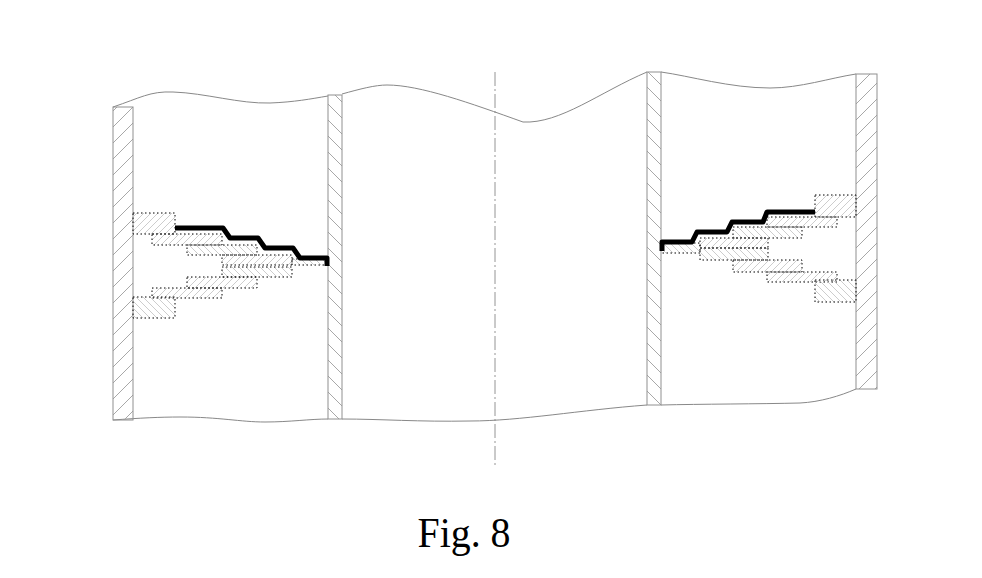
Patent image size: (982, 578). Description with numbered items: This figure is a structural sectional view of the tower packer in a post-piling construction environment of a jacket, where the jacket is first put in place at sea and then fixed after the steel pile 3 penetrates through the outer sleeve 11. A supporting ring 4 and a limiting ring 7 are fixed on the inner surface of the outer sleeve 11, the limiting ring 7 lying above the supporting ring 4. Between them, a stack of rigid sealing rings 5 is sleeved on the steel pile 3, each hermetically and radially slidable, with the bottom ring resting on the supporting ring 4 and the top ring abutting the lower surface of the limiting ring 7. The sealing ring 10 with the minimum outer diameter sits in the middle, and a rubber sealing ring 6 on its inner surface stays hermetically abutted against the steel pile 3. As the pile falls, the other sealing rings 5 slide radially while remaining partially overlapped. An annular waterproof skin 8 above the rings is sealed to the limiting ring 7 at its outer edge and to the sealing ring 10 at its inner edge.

The steel pile 3 is at (333, 128).
The supporting ring 4 is at (153, 305).
The sealing rings 5 is at (240, 289).
The rubber sealing ring 6 is at (662, 252).
The limiting ring 7 is at (145, 220).
The annular waterproof skin 8 is at (198, 226).
The sealing ring with minimum outer diameter 10 is at (315, 268).
The outer sleeve 11 is at (125, 170).